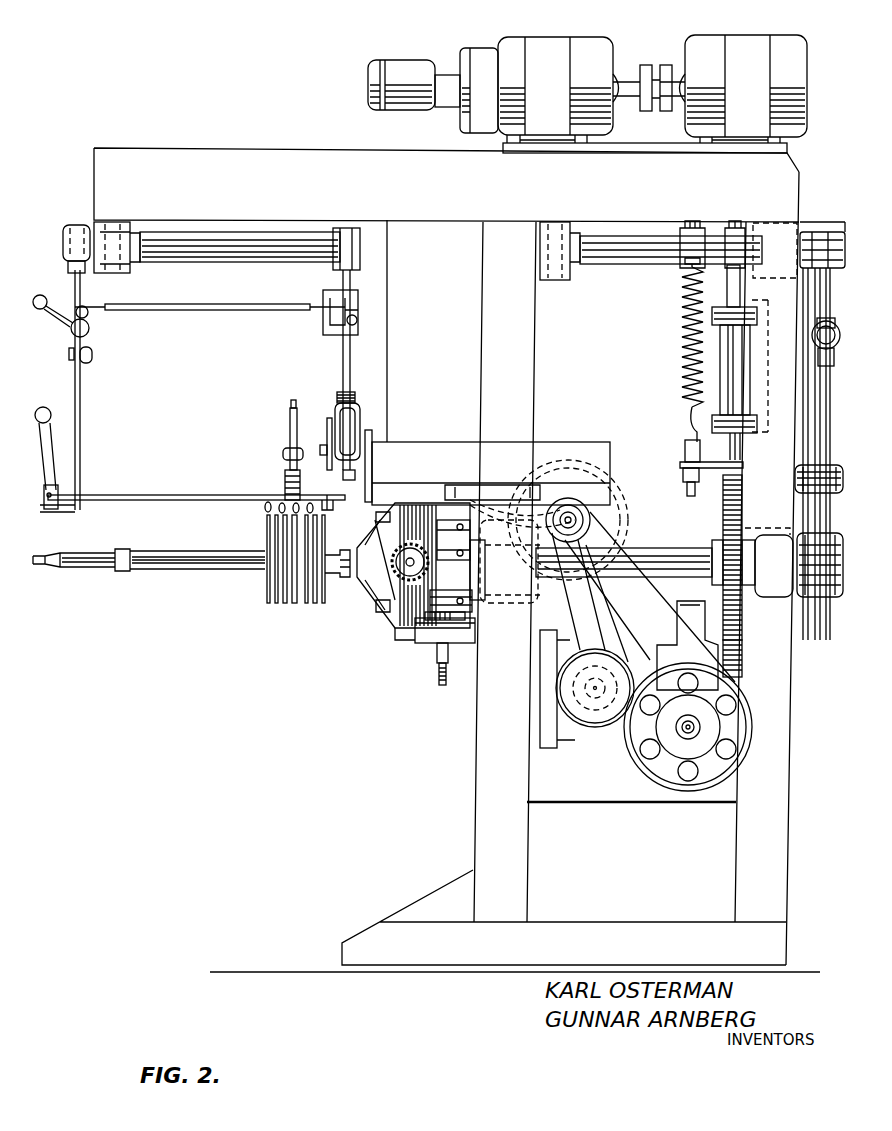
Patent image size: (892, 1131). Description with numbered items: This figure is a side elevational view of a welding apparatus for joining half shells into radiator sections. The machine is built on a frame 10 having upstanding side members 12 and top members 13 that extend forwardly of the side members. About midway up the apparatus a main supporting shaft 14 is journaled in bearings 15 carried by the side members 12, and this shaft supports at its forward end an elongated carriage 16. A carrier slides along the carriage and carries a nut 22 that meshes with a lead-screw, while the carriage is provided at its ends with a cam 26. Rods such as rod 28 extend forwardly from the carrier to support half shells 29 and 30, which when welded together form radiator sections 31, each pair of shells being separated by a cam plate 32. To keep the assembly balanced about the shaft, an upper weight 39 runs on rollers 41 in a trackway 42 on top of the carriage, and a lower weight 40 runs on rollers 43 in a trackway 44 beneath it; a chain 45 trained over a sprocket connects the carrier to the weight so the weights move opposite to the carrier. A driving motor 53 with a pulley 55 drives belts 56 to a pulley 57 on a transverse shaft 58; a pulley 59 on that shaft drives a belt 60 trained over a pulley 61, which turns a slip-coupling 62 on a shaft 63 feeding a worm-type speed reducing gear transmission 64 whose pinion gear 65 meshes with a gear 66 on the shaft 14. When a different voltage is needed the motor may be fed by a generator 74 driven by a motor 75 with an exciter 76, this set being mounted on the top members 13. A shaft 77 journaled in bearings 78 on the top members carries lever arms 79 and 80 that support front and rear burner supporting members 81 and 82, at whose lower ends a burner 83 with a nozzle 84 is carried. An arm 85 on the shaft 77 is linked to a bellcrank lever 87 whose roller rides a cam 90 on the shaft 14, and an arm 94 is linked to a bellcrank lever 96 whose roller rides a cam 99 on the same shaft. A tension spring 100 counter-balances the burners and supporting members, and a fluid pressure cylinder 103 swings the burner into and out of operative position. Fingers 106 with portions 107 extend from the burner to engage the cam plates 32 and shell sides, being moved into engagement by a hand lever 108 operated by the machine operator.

The frame 10 is at (465, 836).
The upstanding side members 12 is at (475, 765).
The top members 13 is at (228, 148).
The main supporting shaft 14 is at (640, 548).
The bearings 15 is at (508, 603).
The carriage 16 is at (477, 582).
The nut 22 is at (372, 588).
The cam 26 is at (432, 500).
The rod 28 is at (200, 567).
The half shell 29 is at (268, 603).
The half shell 30 is at (277, 603).
The radiator section 31 is at (320, 611).
The cam plate 32 is at (294, 603).
The upper weight 39 is at (467, 500).
The lower weight 40 is at (462, 643).
The rollers 41 is at (485, 510).
The trackway 42 is at (468, 542).
The rollers 43 is at (455, 610).
The trackway 44 is at (464, 594).
The chain 45 is at (432, 622).
The driving motor 53 is at (593, 726).
The pulley 55 is at (590, 664).
The belts 56 is at (618, 608).
The pulley 57 is at (623, 493).
The shaft 58 is at (576, 522).
The pulley 59 is at (571, 498).
The belt 60 is at (612, 612).
The pulley 61 is at (650, 756).
The slip-coupling 62 is at (706, 722).
The shaft 63 is at (680, 730).
The speed reducing gear transmission 64 is at (665, 665).
The pinion gear 65 is at (742, 661).
The gear 66 is at (724, 512).
The generator 74 is at (780, 44).
The motor 75 is at (590, 42).
The exciter 76 is at (407, 60).
The shaft 77 is at (255, 255).
The bearings 78 is at (130, 260).
The lever arm 79 is at (75, 259).
The lever arm 80 is at (335, 258).
The front burner supporting member 81 is at (80, 380).
The rear burner supporting member 82 is at (343, 370).
The burner 83 is at (290, 479).
The nozzle 84 is at (266, 510).
The arm 85 is at (808, 279).
The bellcrank lever 87 is at (806, 410).
The cam 90 is at (818, 640).
The arm 94 is at (824, 292).
The bellcrank lever 96 is at (822, 428).
The cam 99 is at (828, 641).
The tension spring 100 is at (682, 383).
The fluid pressure cylinder 103 is at (740, 384).
The fingers 106 is at (332, 503).
The portions 107 is at (348, 506).
The hand lever 108 is at (58, 448).